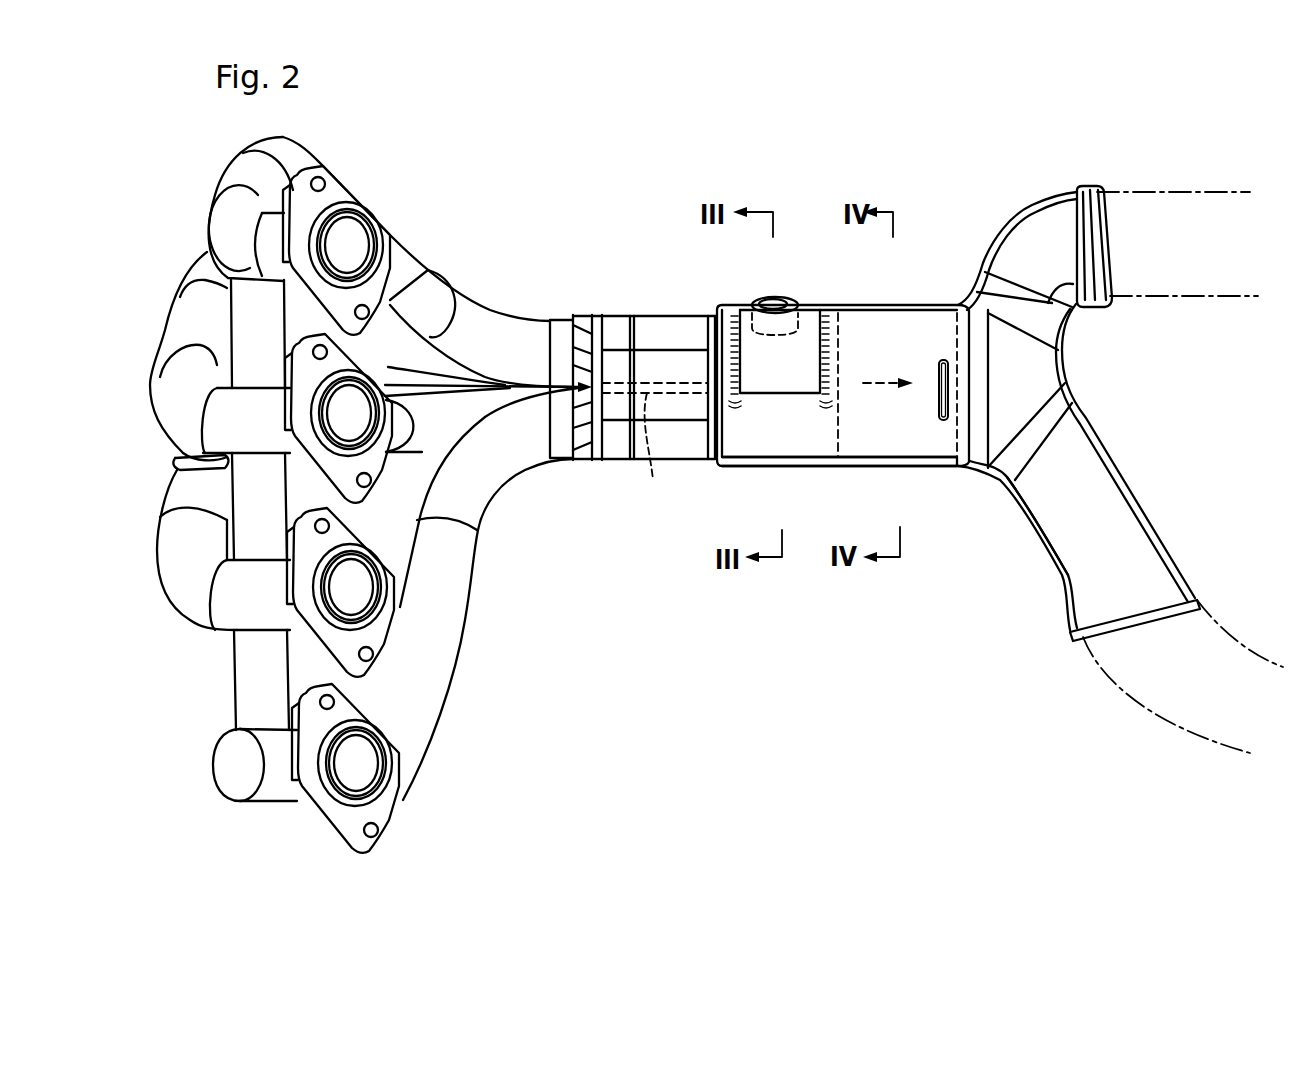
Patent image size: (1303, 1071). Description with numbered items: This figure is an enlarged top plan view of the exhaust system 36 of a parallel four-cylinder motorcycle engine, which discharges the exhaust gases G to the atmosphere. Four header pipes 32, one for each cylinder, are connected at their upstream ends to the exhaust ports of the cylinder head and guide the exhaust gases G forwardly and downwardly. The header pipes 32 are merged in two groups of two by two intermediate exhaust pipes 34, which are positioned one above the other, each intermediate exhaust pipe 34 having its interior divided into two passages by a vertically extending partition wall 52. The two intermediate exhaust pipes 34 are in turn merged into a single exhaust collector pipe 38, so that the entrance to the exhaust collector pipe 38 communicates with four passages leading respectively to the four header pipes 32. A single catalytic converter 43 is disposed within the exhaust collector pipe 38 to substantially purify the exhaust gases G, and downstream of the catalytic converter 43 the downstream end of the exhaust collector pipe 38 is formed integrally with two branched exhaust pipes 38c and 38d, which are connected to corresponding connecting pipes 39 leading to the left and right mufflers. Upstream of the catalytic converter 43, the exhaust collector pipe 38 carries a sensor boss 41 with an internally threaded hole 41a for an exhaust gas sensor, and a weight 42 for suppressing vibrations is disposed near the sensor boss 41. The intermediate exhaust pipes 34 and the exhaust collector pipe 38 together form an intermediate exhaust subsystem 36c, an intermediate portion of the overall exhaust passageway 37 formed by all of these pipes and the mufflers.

The header pipe 32 is at (413, 267).
The intermediate exhaust pipe 34 is at (581, 330).
The exhaust system 36 is at (719, 471).
The intermediate exhaust subsystem 36c is at (750, 467).
The exhaust passageway 37 is at (716, 490).
The exhaust collector pipe 38 is at (935, 468).
The branched exhaust pipe 38c is at (1030, 513).
The branched exhaust pipe 38d is at (1067, 192).
The connecting pipe 39 is at (1180, 277).
The sensor boss 41 is at (797, 298).
The internally threaded hole 41a is at (770, 298).
The weight 42 is at (787, 370).
The catalytic converter 43 is at (957, 312).
The partition wall 52 is at (658, 452).
The exhaust gases G is at (882, 381).